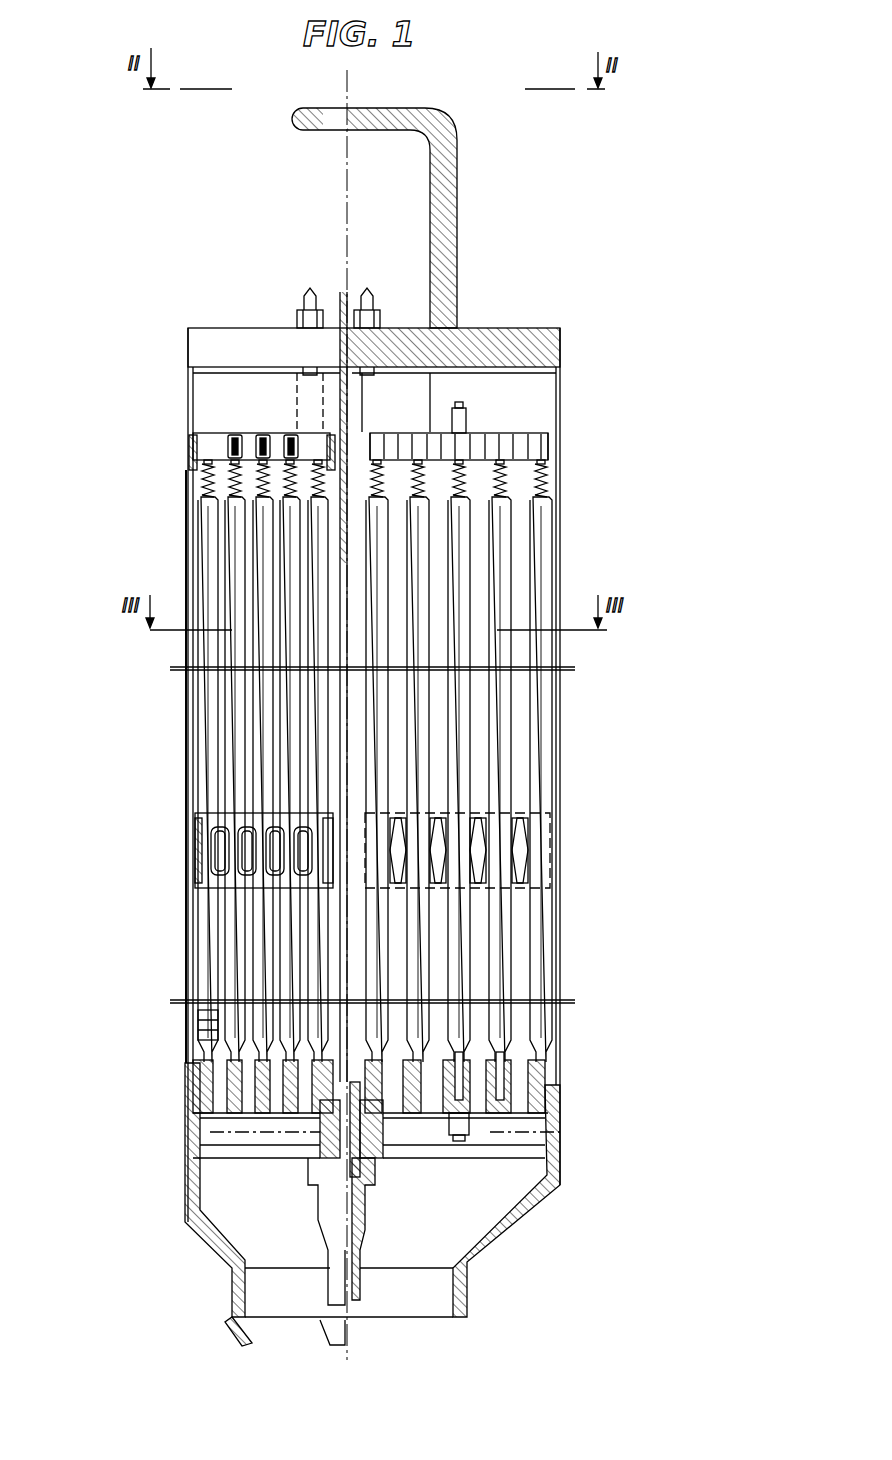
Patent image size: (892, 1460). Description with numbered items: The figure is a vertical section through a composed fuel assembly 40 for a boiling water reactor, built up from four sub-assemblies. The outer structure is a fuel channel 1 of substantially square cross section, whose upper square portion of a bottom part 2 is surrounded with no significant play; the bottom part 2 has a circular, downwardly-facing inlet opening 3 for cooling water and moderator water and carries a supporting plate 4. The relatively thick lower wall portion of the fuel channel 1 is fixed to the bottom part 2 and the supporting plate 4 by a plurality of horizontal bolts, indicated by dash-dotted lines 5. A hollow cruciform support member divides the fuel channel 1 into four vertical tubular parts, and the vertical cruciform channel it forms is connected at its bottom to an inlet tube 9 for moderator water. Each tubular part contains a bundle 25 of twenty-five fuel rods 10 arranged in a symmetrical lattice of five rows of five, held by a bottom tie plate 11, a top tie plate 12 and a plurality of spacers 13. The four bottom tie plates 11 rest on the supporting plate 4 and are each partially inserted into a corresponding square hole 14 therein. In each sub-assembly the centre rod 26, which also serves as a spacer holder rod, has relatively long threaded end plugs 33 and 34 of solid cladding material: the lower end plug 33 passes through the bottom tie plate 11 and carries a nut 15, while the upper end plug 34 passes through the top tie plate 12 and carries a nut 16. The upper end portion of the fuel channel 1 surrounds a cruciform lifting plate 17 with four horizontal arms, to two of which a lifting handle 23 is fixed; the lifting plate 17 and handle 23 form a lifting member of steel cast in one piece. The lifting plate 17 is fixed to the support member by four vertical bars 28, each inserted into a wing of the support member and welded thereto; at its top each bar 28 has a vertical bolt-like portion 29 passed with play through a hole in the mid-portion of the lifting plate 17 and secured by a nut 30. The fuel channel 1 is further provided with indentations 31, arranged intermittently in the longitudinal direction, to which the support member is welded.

The fuel channel 1 is at (562, 742).
The bottom part 2 is at (185, 1225).
The inlet opening 3 is at (385, 1300).
The supporting plate 4 is at (195, 1160).
The horizontal bolts 5 is at (220, 1132).
The inlet tube 9 is at (325, 1285).
The fuel rods 10 is at (230, 768).
The bottom tie plate 11 is at (192, 1078).
The top tie plate 12 is at (205, 460).
The spacers 13 is at (200, 878).
The square hole 14 is at (407, 1130).
The nut 15 is at (540, 1121).
The nut 16 is at (462, 425).
The lifting plate 17 is at (410, 355).
The lifting handle 23 is at (421, 109).
The fuel rod bundle 25 is at (225, 560).
The centre rod 26 is at (460, 655).
The vertical bars 28 is at (300, 412).
The bolt-like portion 29 is at (371, 296).
The nut 30 is at (305, 330).
The indentations 31 is at (180, 928).
The lower end plug 33 is at (505, 1045).
The upper end plug 34 is at (540, 430).
The composed fuel assembly 40 is at (578, 367).